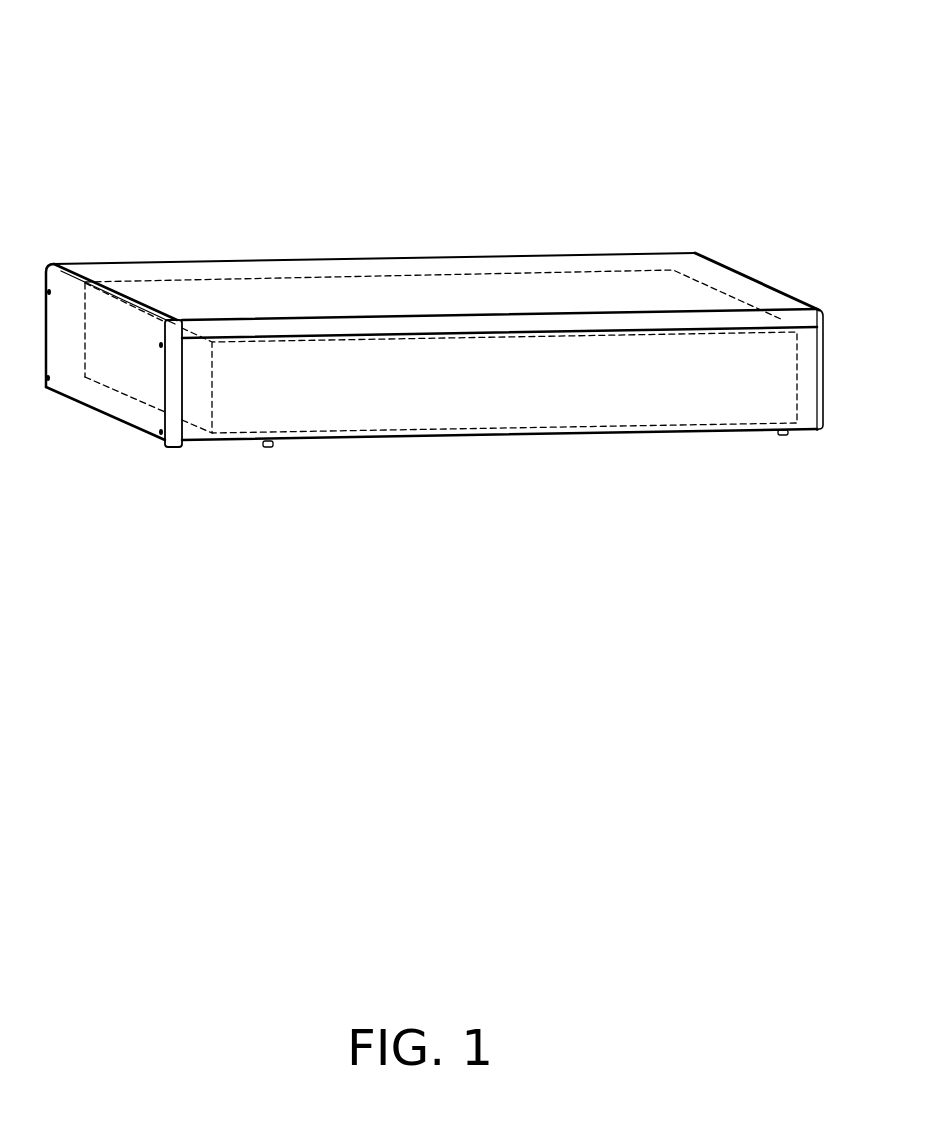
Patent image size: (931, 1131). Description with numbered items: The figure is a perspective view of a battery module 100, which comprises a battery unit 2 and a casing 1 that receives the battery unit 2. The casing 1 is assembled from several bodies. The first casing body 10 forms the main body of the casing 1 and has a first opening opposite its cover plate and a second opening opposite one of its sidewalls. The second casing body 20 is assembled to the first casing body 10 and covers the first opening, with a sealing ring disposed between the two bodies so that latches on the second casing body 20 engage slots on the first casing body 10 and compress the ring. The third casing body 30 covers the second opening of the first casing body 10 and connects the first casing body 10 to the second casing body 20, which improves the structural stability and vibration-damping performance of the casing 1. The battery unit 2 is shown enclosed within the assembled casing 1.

The battery module 100 is at (307, 70).
The casing 1 is at (302, 254).
The second casing body 20 is at (428, 265).
The third casing body 30 is at (127, 398).
The battery unit 2 is at (650, 402).
The first casing body 10 is at (807, 412).